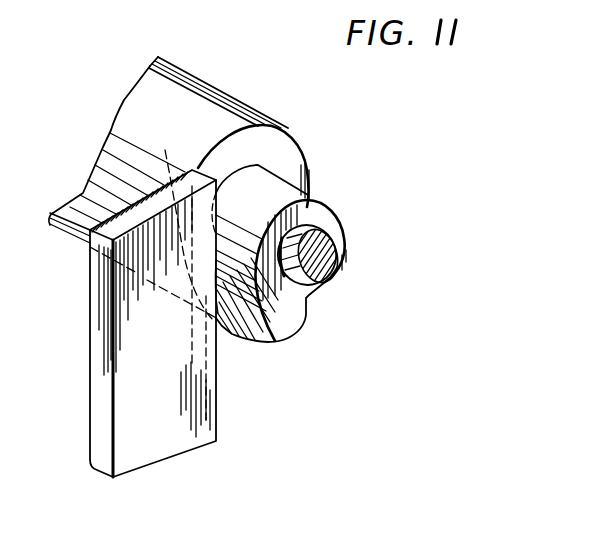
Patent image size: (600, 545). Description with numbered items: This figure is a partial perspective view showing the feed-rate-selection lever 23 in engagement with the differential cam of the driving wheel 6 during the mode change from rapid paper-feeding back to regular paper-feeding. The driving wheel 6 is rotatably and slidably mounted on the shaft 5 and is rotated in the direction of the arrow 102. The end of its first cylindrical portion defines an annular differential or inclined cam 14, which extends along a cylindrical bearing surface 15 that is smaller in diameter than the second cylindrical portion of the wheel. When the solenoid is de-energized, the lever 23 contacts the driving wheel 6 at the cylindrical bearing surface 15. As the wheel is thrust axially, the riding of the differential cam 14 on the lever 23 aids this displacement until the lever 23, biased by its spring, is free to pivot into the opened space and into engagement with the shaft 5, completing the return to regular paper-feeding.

The driving wheel 6 is at (215, 107).
The lever 23 is at (175, 185).
The cylindrical bearing surface 15 is at (293, 177).
The shaft 5 is at (308, 231).
The arrow 102 is at (276, 274).
The annular differential cam 14 is at (237, 340).